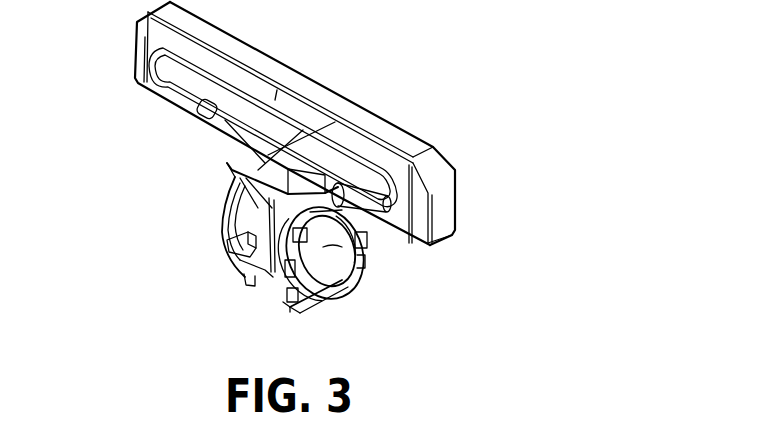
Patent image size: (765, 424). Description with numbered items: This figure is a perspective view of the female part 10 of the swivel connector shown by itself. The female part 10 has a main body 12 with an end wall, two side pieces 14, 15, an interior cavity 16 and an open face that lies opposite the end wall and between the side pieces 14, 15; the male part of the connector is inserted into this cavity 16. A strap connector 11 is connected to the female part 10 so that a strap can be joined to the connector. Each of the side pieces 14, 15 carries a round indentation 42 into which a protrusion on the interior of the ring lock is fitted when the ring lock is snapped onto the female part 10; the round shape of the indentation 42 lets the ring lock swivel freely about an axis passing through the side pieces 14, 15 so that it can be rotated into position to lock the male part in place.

The female part 10 is at (115, 176).
The strap connector 11 is at (397, 163).
The main body 12 is at (337, 290).
The side piece 14 is at (222, 251).
The side piece 15 is at (293, 315).
The interior cavity 16 is at (267, 278).
The indentation 42 is at (362, 256).